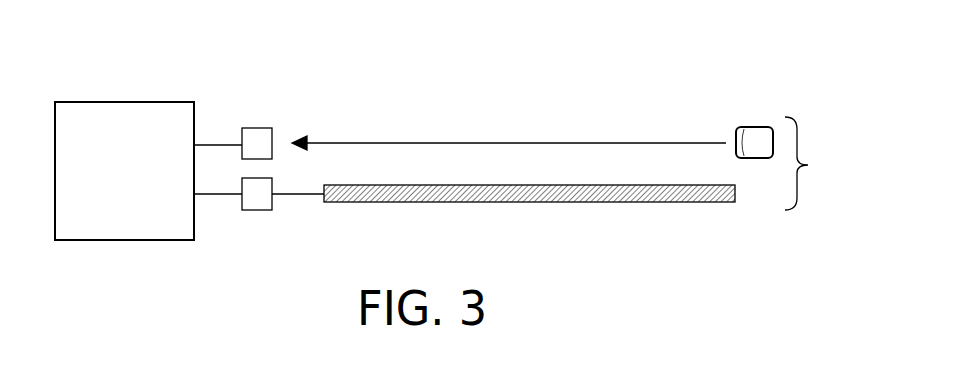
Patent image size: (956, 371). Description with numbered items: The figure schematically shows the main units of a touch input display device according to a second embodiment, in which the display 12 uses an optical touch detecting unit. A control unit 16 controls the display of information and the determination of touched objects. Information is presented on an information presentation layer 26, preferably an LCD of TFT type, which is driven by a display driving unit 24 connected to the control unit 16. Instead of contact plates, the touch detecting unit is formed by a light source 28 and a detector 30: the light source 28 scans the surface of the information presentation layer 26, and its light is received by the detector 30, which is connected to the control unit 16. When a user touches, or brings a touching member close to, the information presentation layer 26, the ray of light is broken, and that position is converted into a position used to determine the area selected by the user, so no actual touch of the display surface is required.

The display 12 is at (812, 163).
The control unit 16 is at (123, 102).
The display driving unit 24 is at (258, 210).
The information presentation layer 26 is at (551, 203).
The light source 28 is at (753, 127).
The detector 30 is at (260, 128).